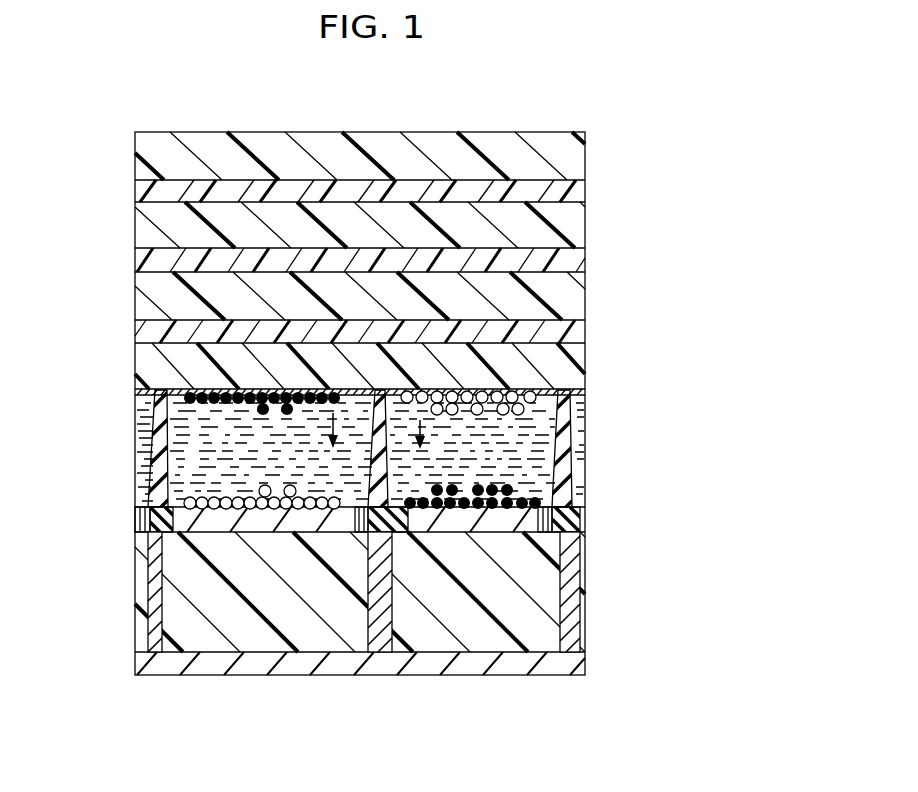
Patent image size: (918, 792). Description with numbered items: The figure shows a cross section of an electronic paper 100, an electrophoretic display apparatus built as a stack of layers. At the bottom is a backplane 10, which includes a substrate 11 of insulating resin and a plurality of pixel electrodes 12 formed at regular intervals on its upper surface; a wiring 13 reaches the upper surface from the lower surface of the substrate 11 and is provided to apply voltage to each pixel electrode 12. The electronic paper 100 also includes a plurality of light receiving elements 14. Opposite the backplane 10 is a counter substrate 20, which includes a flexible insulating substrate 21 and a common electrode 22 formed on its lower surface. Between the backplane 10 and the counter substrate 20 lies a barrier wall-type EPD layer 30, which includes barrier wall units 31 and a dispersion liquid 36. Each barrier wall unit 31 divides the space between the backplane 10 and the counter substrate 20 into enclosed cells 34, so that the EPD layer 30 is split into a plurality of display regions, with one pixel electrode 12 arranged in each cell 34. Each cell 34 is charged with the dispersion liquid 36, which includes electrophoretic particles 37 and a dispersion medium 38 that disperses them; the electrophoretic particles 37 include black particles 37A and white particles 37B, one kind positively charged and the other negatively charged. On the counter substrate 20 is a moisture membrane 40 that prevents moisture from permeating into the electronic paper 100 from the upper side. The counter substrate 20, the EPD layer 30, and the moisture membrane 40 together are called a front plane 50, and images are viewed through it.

The electronic paper 100 is at (94, 97).
The front plane 50 is at (44, 132).
The moisture membrane 40 is at (129, 132).
The counter substrate 20 is at (129, 345).
The substrate 21 is at (568, 357).
The common electrode 22 is at (562, 410).
The EPD layer 30 is at (129, 389).
The barrier wall unit 31 is at (570, 500).
The cell 34 is at (336, 410).
The dispersion liquid 36 is at (700, 395).
The electrophoretic particles 37 is at (652, 408).
The black particles 37A is at (520, 492).
The white particles 37B is at (575, 424).
The dispersion medium 38 is at (590, 396).
The light receiving element 14 is at (578, 526).
The backplane 10 is at (46, 556).
The substrate 11 is at (178, 622).
The pixel electrode 12 is at (213, 523).
The wiring 13 is at (550, 663).